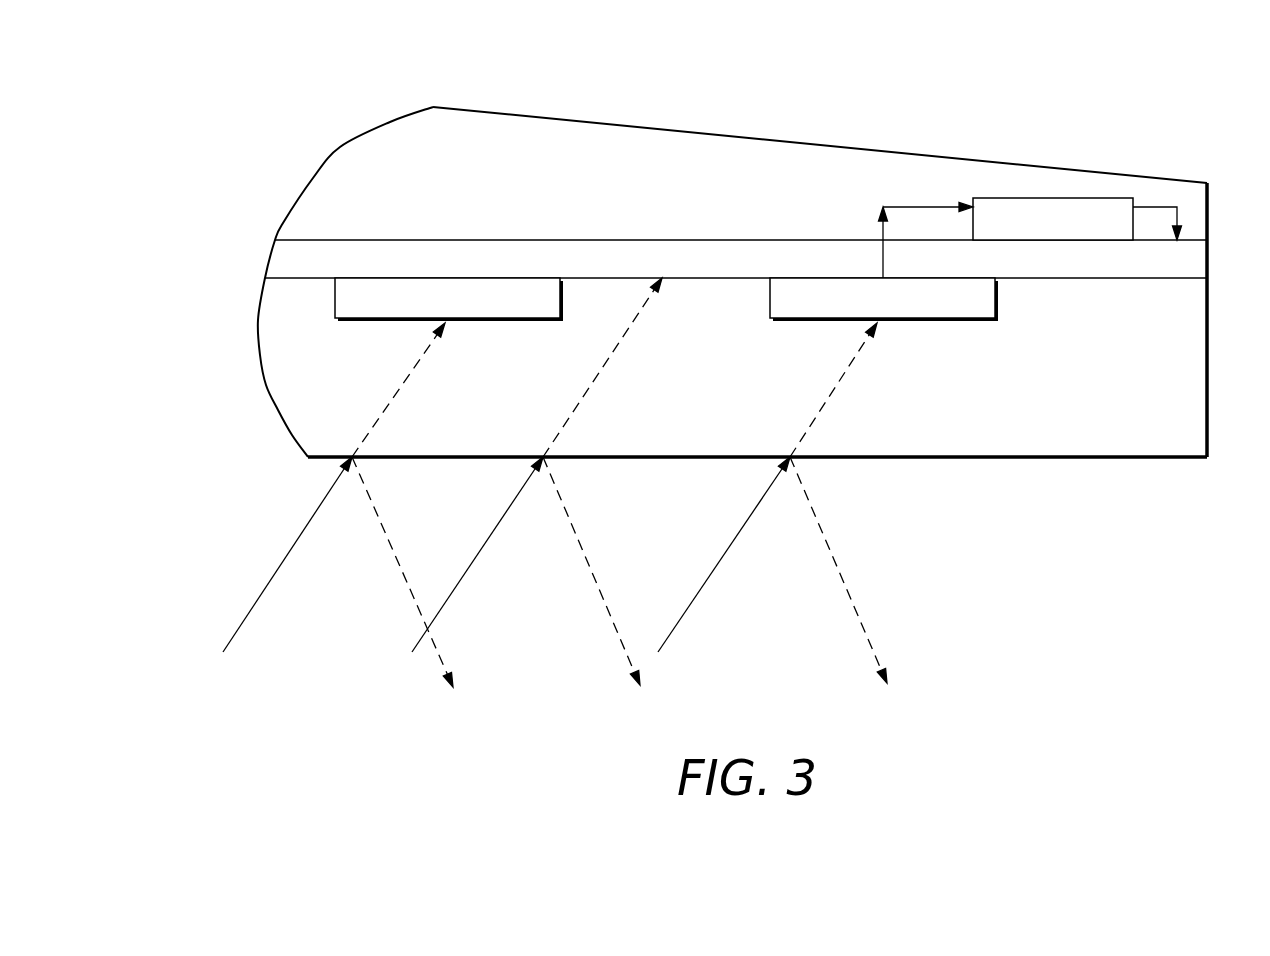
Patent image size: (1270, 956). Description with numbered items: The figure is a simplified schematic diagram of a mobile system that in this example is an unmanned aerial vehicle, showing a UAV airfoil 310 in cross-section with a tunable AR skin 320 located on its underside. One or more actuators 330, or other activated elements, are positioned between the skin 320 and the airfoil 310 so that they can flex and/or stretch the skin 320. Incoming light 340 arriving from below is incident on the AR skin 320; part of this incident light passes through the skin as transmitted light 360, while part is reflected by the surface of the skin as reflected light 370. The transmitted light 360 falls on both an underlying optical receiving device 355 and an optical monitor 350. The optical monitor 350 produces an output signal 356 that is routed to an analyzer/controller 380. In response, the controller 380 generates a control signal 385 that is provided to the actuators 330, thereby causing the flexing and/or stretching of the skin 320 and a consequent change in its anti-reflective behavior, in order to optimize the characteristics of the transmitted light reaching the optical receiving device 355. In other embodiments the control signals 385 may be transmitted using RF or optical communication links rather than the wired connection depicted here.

The UAV airfoil 310 is at (313, 179).
The tunable AR skin 320 is at (270, 382).
The actuators 330 is at (272, 261).
The incoming light 340 is at (222, 588).
The optical monitor 350 is at (1000, 302).
The optical receiving device 355 is at (378, 323).
The optical monitor signal line 356 is at (904, 204).
The transmitted light 360 is at (837, 389).
The reflected light 370 is at (920, 616).
The analyzer/controller 380 is at (1028, 198).
The control signal 385 is at (1153, 207).